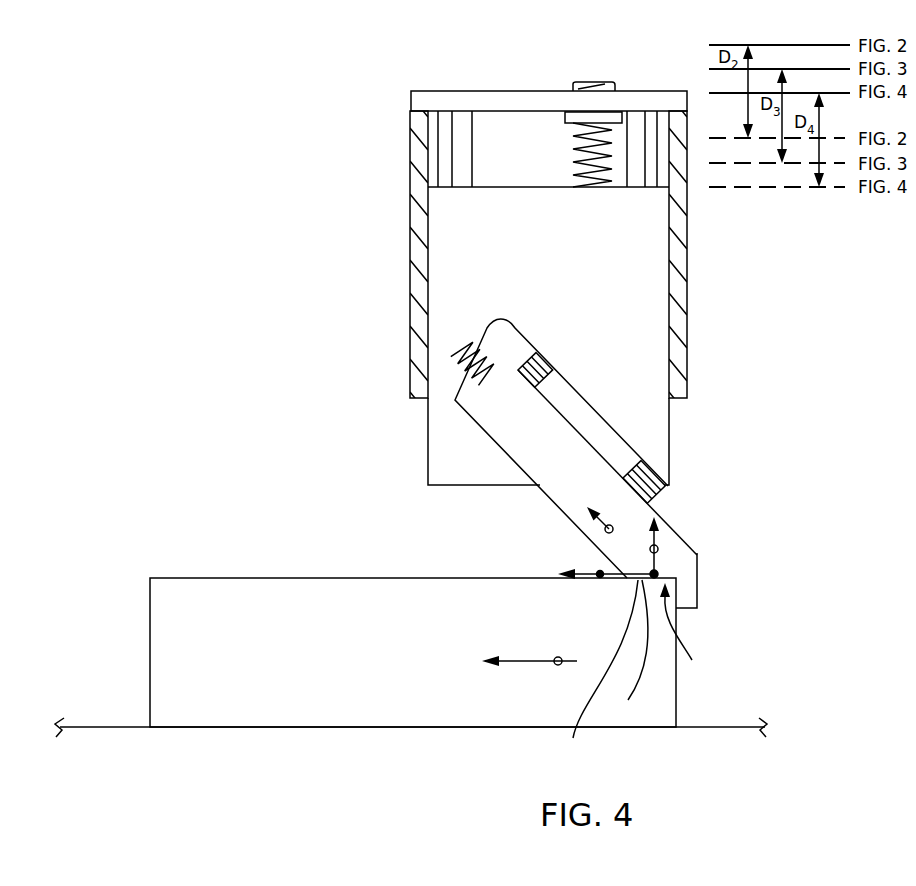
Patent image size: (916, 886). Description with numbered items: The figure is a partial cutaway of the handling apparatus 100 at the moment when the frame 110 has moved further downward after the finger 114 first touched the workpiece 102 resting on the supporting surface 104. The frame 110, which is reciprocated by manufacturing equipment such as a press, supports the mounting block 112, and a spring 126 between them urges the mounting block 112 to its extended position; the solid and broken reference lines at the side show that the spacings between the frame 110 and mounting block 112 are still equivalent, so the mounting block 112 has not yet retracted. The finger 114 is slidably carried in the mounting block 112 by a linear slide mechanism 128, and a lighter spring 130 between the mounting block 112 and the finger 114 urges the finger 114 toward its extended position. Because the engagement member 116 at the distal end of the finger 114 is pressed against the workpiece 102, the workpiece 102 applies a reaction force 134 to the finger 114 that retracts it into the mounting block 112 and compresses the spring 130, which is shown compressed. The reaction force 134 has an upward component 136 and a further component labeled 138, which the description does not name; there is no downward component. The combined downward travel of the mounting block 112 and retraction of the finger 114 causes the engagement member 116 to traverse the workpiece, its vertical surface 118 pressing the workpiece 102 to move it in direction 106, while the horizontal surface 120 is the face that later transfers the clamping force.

The handling apparatus 100 is at (333, 92).
The workpiece 102 is at (307, 578).
The supporting surface 104 is at (112, 727).
The direction of moving force 106 is at (558, 661).
The frame 110 is at (417, 207).
The mounting block 112 is at (470, 268).
The finger 114 is at (512, 437).
The engagement member 116 is at (694, 628).
The vertical surface 118 is at (631, 653).
The horizontal surface 120 is at (595, 669).
The spring 126 is at (574, 150).
The linear slide mechanism 128 is at (598, 433).
The spring 130 is at (458, 362).
The reaction force 134 is at (605, 529).
The upward component of force 136 is at (656, 556).
The friction contact point 138 is at (600, 578).